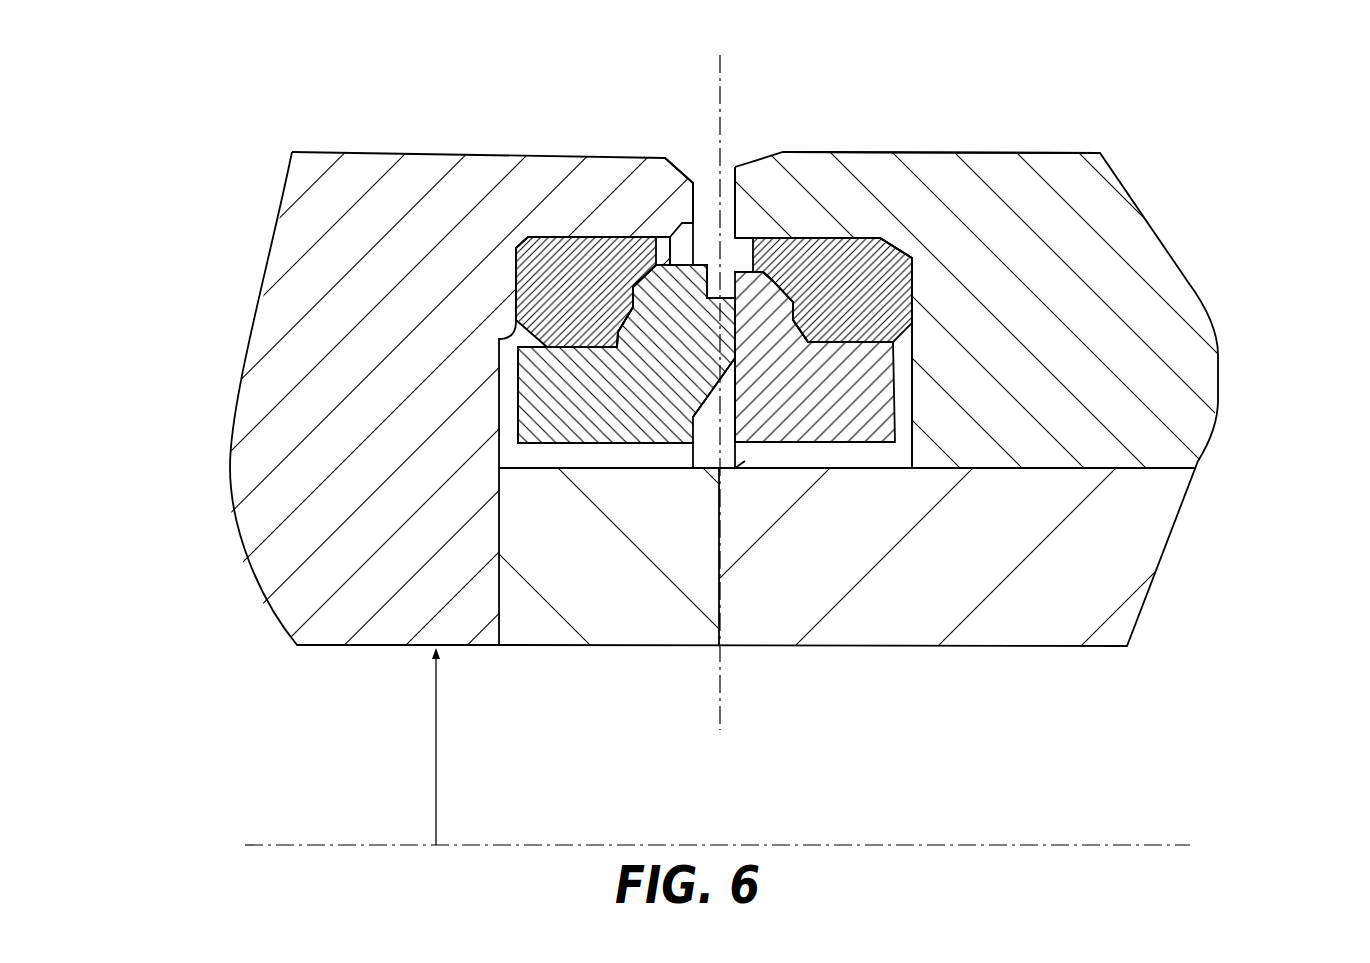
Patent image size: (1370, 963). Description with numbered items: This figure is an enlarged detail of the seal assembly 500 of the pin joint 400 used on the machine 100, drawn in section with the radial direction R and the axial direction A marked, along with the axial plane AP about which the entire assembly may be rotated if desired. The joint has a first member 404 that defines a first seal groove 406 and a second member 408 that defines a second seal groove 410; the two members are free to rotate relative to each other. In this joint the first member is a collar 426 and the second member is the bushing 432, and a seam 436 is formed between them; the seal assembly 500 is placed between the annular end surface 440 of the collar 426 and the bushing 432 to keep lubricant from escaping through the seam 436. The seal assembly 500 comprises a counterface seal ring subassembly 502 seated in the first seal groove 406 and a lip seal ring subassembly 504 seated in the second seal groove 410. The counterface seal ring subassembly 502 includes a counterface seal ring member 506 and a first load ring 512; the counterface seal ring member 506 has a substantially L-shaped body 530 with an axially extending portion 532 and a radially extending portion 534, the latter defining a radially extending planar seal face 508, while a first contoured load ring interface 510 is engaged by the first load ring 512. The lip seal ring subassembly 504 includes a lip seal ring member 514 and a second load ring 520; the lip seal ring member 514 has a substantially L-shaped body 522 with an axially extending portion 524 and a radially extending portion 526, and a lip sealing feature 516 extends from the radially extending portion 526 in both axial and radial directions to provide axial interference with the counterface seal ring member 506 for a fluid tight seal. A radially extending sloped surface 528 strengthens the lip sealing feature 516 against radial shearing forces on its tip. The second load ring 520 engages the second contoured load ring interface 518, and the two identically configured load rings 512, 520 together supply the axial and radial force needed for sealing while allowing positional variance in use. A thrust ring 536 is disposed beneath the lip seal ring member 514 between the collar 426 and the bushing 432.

The machine 100 is at (941, 90).
The pin joint 400 is at (878, 82).
The first member 404 is at (556, 481).
The first seal groove 406 is at (516, 389).
The second member 408 is at (1160, 266).
The second seal groove 410 is at (915, 386).
The collar 426 is at (342, 188).
The bushing 432 is at (737, 203).
The seam 436 is at (710, 193).
The annular end surface of the collar 440 is at (688, 200).
The seal assembly 500 is at (728, 152).
The counterface seal ring subassembly 502 is at (834, 218).
The lip seal ring subassembly 504 is at (527, 212).
The counterface seal ring member 506 is at (853, 478).
The radially extending planar seal face 508 is at (665, 338).
The first contoured load ring interface 510 is at (797, 307).
The first load ring 512 is at (866, 263).
The lip seal ring member 514 is at (592, 525).
The lip sealing feature 516 is at (727, 297).
The second contoured load ring interface 518 is at (623, 333).
The second load ring 520 is at (516, 274).
The L-shaped body of the lip seal ring member 522 is at (568, 417).
The axially extending portion of the lip seal ring member body 524 is at (625, 422).
The radially extending portion of the lip seal ring member body 526 is at (735, 415).
The radially extending sloped surface 528 is at (710, 392).
The L-shaped body of the counterface seal ring member 530 is at (850, 417).
The axially extending portion of the counterface seal ring member body 532 is at (802, 428).
The radially extending portion of the counterface seal ring member body 534 is at (757, 327).
The thrust ring 536 is at (578, 602).
The radial direction R is at (438, 798).
The axial direction A is at (1043, 843).
The axial plane AP is at (723, 702).